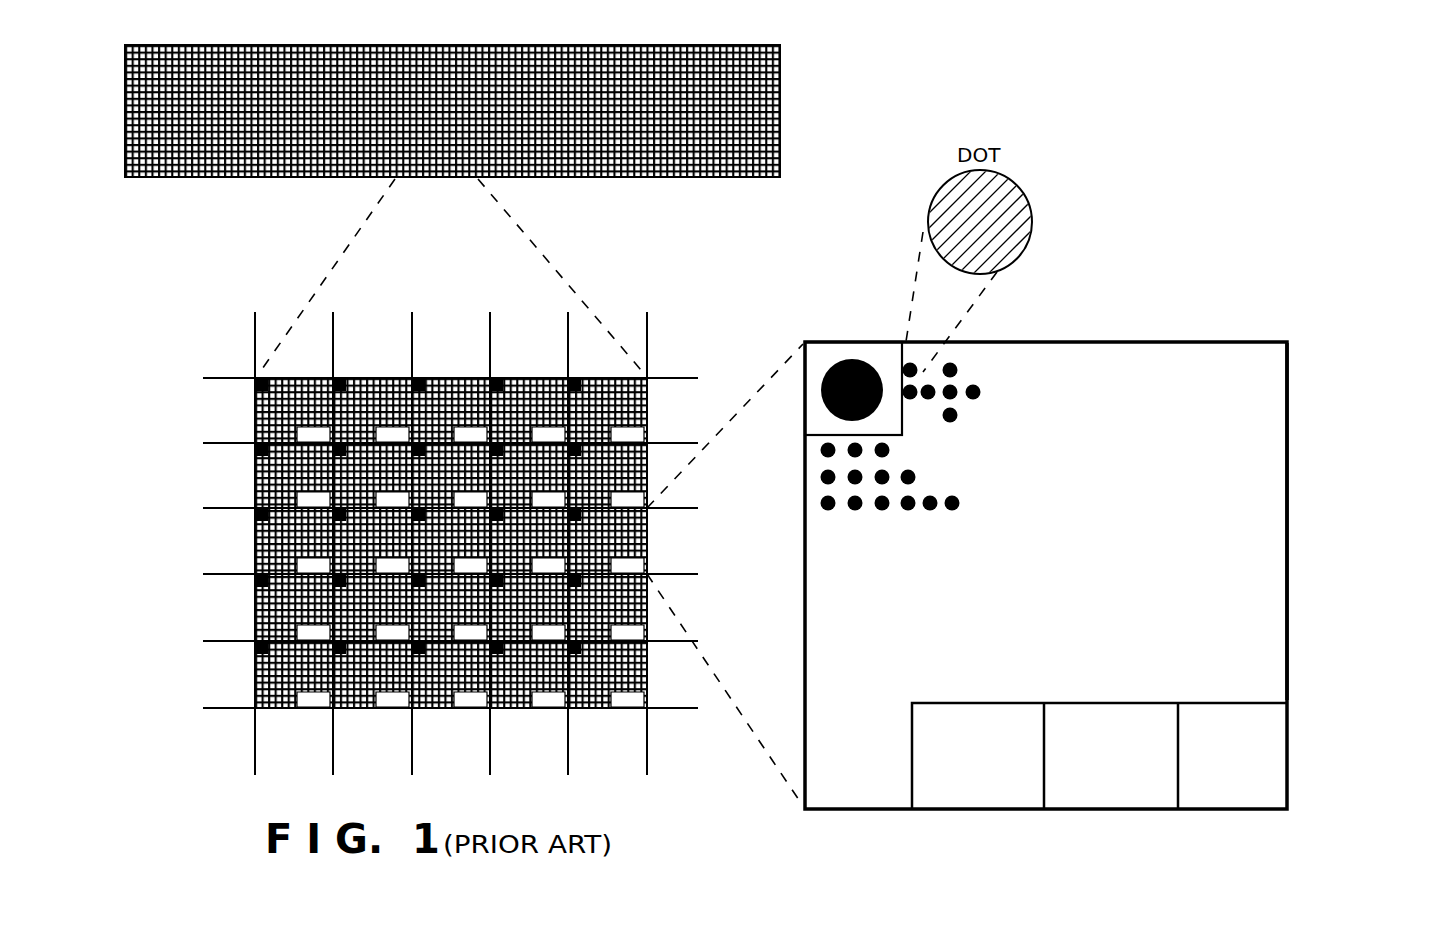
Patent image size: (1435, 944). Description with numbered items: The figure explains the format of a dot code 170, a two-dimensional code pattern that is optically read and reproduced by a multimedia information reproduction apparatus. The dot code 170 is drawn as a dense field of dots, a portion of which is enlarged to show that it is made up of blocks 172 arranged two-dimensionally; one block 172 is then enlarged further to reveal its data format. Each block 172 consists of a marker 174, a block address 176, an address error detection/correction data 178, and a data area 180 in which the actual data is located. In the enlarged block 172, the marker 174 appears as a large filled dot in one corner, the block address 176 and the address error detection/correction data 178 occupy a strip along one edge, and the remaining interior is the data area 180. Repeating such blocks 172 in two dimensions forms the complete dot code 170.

The dot code 170 is at (452, 132).
The block 172 is at (845, 811).
The marker 174 is at (843, 360).
The block address 176 is at (1053, 809).
The address error detection/correction data 178 is at (1273, 738).
The data area 180 is at (1287, 388).